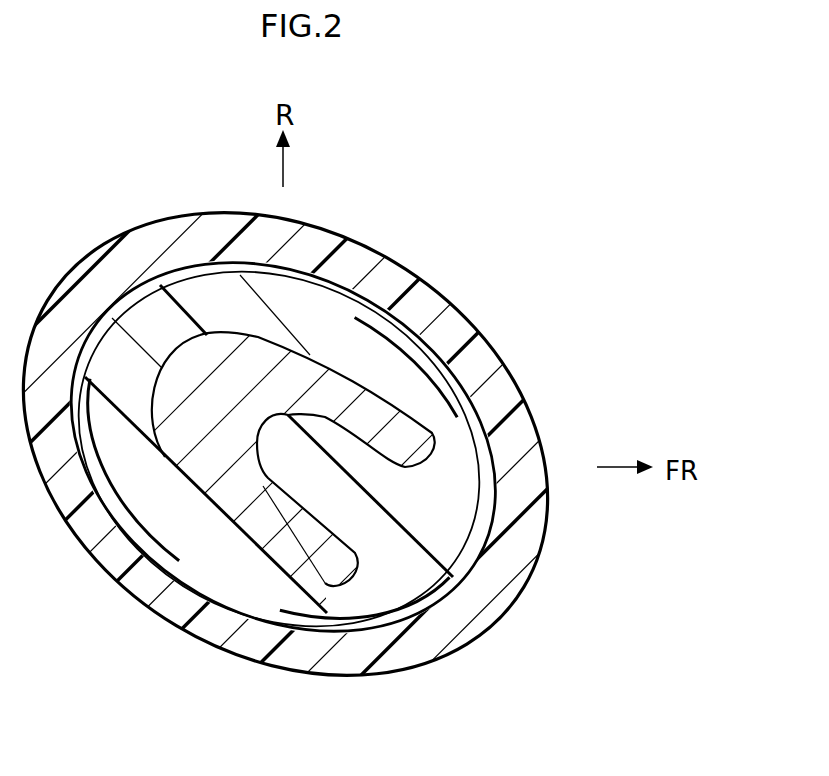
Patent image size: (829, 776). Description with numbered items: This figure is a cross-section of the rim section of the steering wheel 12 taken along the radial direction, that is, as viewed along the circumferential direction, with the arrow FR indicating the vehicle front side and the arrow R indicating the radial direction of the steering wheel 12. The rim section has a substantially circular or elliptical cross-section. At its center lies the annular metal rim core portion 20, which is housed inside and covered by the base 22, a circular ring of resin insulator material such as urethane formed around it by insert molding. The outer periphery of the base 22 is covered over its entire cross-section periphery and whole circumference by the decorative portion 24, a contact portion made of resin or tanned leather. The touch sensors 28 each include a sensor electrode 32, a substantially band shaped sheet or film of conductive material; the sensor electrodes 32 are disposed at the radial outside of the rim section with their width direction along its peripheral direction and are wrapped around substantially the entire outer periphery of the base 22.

The steering wheel 12 is at (560, 205).
The rim core portion 20 is at (349, 370).
The base 22 is at (452, 547).
The decorative portion 24 is at (455, 640).
The touch sensor 28 is at (490, 443).
The sensor electrode 32 is at (497, 487).